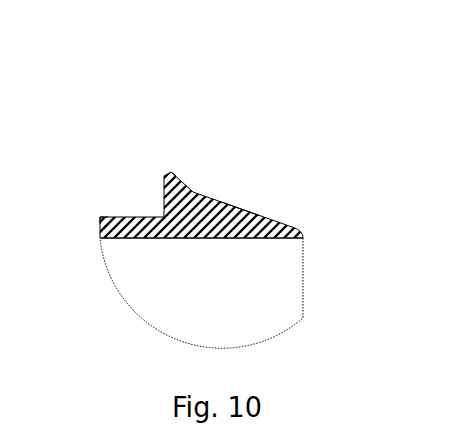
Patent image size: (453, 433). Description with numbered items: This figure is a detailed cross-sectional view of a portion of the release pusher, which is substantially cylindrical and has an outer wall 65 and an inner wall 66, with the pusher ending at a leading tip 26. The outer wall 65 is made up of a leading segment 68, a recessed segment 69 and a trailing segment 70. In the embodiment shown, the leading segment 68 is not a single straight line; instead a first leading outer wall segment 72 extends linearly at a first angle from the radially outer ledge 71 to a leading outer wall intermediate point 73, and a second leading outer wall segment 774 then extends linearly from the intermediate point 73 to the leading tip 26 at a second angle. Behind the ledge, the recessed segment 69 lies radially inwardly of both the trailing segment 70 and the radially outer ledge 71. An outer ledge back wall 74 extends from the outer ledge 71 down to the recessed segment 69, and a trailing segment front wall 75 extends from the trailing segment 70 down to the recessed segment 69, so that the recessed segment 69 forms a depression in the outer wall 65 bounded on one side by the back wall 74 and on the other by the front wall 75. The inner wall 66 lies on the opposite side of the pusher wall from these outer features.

The leading tip 26 is at (308, 243).
The outer wall 65 is at (122, 77).
The inner wall 66 is at (195, 243).
The leading segment 68 is at (290, 153).
The recessed segment 69 is at (130, 213).
The trailing segment 70 is at (100, 212).
The radially outer ledge 71 is at (173, 170).
The first leading outer wall segment 72 is at (193, 187).
The leading outer wall intermediate point 73 is at (200, 192).
The outer ledge back wall 74 is at (167, 207).
The trailing segment front wall 75 is at (97, 220).
The second leading outer wall segment 774 is at (235, 203).